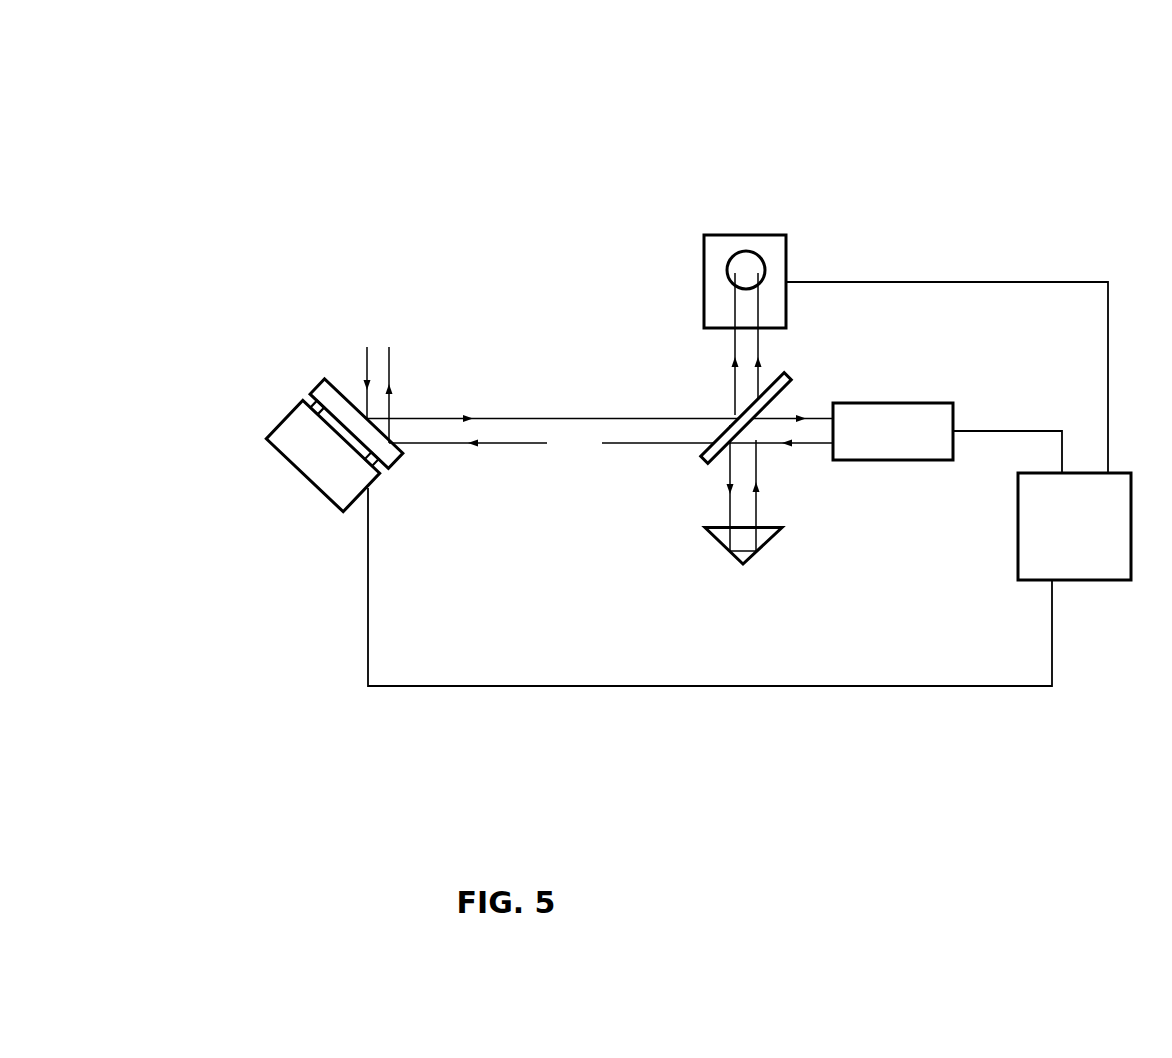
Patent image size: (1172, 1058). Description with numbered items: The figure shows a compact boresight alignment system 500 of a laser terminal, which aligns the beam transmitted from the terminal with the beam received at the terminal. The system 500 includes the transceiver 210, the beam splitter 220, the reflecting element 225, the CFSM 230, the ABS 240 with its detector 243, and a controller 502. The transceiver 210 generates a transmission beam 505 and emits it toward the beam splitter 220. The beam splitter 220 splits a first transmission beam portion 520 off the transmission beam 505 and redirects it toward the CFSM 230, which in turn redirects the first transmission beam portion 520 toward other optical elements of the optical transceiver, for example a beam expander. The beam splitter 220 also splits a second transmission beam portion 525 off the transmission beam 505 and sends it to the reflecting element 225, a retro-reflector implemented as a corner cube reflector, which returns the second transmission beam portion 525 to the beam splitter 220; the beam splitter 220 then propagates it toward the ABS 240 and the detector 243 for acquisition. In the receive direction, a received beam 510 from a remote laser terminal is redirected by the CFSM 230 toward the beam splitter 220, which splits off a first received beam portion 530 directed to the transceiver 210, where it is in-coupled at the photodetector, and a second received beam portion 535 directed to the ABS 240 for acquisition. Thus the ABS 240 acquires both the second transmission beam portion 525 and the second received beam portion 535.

The compact boresight alignment system 500 is at (40, 52).
The CFSM 230 is at (330, 473).
The received beam 510 is at (367, 357).
The first transmission beam portion 520 is at (390, 372).
The first received beam portion 530 is at (805, 420).
The transmission beam 505 is at (795, 447).
The second received beam portion 535 is at (733, 347).
The second transmission beam portion 525 is at (760, 357).
The reflecting element 225 is at (763, 543).
The beam splitter 220 is at (705, 462).
The ABS 240 is at (713, 233).
The detector 243 is at (757, 257).
The transceiver 210 is at (945, 402).
The controller 502 is at (1074, 526).